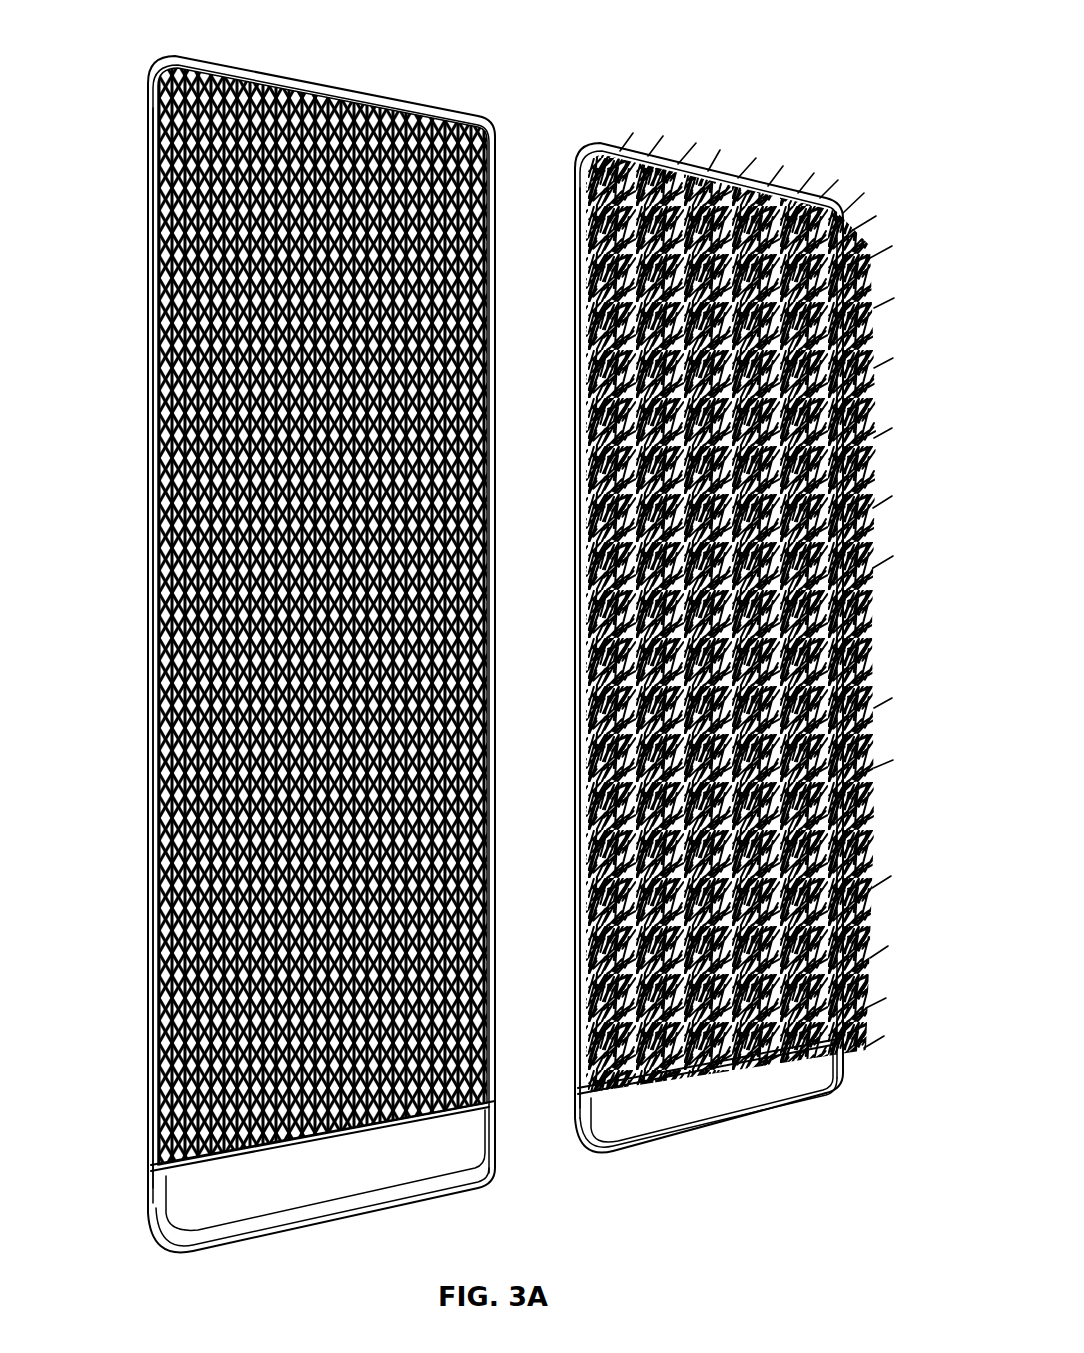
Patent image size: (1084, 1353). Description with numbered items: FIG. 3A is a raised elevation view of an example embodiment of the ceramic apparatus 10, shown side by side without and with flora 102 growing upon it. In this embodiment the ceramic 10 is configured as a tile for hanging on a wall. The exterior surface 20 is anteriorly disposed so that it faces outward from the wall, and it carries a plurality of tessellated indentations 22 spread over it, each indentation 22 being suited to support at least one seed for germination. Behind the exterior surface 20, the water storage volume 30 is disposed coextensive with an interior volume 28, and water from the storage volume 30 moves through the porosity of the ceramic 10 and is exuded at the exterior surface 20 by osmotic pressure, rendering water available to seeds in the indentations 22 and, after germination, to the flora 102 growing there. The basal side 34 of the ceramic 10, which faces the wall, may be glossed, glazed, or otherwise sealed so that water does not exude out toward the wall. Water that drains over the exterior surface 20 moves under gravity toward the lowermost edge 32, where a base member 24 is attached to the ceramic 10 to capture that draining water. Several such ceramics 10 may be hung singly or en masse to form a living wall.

The ceramic apparatus 10 is at (123, 166).
The exterior surface 20 is at (152, 672).
The tessellated indentations 22 is at (152, 931).
The base member 24 is at (172, 1196).
The interior volume 28 is at (181, 40).
The water storage volume 30 is at (273, 43).
The lowermost edge 32 is at (128, 1142).
The basal side 34 is at (123, 518).
The flora 102 is at (860, 656).